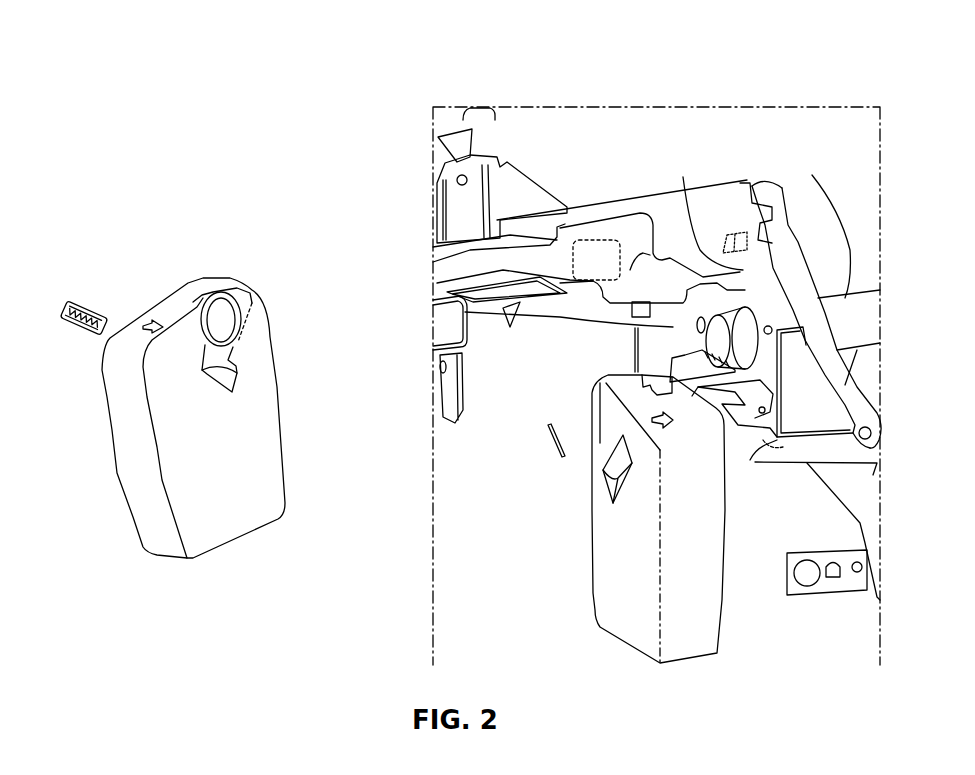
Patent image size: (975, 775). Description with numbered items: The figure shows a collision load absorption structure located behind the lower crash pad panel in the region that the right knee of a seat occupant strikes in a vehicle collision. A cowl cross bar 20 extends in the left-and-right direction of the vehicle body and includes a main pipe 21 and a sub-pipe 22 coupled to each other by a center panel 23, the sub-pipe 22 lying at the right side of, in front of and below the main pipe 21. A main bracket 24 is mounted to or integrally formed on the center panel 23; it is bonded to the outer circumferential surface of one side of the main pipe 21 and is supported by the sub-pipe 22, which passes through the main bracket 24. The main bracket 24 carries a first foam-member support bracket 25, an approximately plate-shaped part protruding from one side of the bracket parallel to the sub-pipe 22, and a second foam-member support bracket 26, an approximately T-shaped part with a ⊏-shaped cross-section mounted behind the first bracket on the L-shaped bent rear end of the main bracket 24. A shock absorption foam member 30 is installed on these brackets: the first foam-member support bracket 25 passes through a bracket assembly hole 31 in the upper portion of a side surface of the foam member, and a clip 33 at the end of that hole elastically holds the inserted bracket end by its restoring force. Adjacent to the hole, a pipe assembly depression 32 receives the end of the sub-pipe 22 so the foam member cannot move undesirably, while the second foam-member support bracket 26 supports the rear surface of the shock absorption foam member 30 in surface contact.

The cowl cross bar 20 is at (710, 72).
The main pipe 21 is at (715, 200).
The sub-pipe 22 is at (826, 180).
The center panel 23 is at (763, 190).
The main bracket 24 is at (689, 192).
The first foam-member support bracket 25 is at (740, 400).
The second foam-member support bracket 26 is at (672, 357).
The shock absorption foam member 30 is at (200, 268).
The bracket assembly hole 31 is at (237, 373).
The pipe assembly depression 32 is at (247, 287).
The clip 33 is at (90, 307).